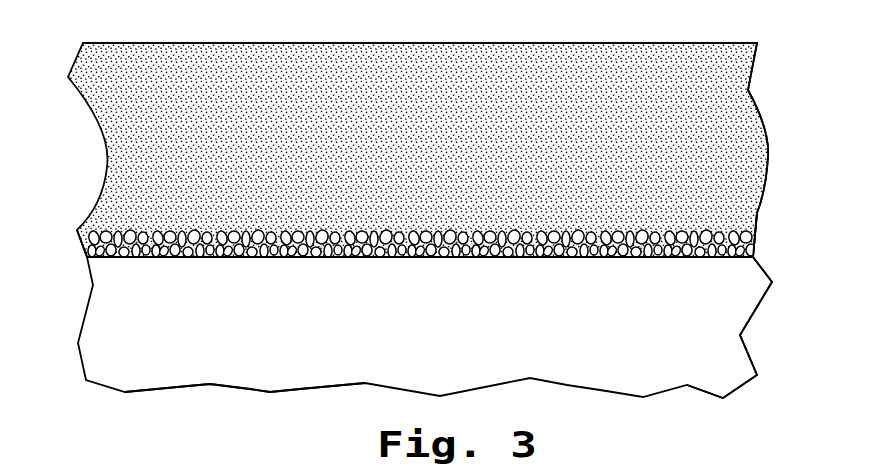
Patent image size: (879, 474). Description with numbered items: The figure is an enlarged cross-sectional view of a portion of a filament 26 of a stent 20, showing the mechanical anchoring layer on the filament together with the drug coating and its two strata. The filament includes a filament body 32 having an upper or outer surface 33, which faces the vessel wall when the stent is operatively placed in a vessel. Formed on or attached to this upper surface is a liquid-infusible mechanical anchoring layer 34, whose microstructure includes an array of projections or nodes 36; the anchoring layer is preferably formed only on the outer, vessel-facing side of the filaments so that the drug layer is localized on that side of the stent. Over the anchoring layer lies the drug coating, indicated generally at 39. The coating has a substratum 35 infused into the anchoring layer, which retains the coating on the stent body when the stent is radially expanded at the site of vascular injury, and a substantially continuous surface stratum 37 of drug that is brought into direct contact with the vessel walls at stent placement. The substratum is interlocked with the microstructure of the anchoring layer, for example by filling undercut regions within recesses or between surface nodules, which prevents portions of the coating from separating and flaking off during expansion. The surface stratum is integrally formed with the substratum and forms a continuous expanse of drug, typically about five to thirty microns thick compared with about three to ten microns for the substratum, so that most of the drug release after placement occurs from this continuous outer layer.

The stent 20 is at (746, 352).
The filament 26 is at (273, 367).
The filament body 32 is at (425, 327).
The upper or outer surface 33 is at (403, 257).
The liquid-infusible mechanical anchoring layer 34 is at (755, 240).
The substratum 35 is at (83, 232).
The nodes 36 is at (540, 257).
The surface stratum 37 is at (393, 80).
The drug coating 39 is at (760, 115).